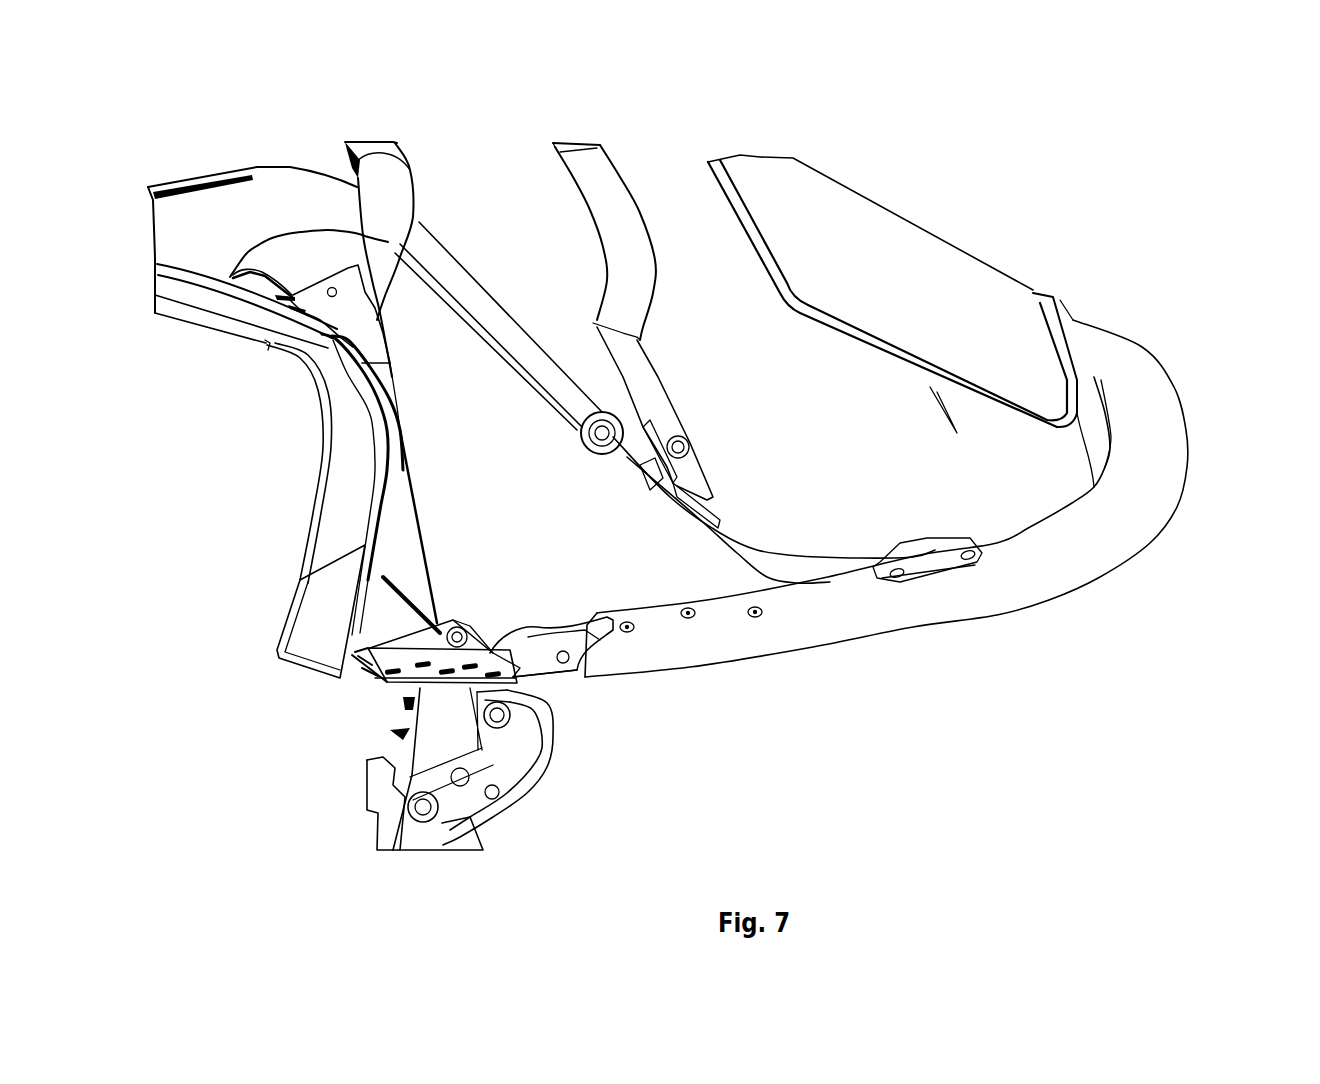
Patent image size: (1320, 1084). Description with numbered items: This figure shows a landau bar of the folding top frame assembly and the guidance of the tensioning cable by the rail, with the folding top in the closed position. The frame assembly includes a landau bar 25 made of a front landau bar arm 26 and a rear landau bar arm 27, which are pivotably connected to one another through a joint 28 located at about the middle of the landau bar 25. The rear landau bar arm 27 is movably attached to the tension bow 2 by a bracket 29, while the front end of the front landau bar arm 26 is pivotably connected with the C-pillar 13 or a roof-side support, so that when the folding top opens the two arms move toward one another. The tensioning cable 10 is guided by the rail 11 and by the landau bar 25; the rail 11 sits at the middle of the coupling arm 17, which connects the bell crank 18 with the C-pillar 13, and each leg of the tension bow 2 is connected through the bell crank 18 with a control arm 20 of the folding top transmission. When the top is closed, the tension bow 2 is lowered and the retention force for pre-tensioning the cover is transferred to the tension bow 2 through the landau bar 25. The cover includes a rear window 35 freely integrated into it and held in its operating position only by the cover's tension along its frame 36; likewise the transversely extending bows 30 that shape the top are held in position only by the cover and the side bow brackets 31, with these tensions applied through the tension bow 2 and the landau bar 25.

The tension bow 2 is at (1140, 515).
The tensioning cable 10 is at (553, 680).
The rail 11 is at (393, 660).
The C-pillar 13 is at (320, 617).
The coupling arm 17 is at (518, 667).
The bell crank 18 is at (528, 637).
The control arm 20 is at (518, 760).
The landau bar 25 is at (509, 386).
The front landau bar arm 26 is at (230, 222).
The rear landau bar arm 27 is at (767, 560).
The joint 28 is at (588, 435).
The bracket 29 is at (940, 557).
The bow 30 is at (612, 198).
The side bow bracket 31 is at (372, 270).
The rear window 35 is at (958, 277).
The frame 36 is at (1062, 318).